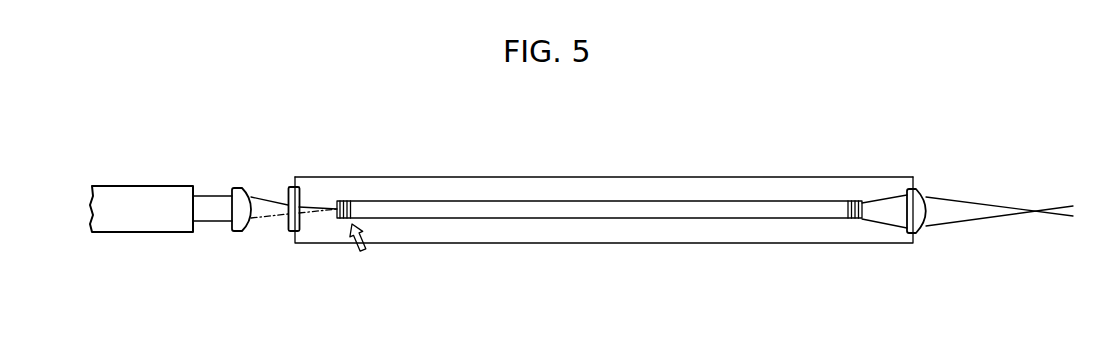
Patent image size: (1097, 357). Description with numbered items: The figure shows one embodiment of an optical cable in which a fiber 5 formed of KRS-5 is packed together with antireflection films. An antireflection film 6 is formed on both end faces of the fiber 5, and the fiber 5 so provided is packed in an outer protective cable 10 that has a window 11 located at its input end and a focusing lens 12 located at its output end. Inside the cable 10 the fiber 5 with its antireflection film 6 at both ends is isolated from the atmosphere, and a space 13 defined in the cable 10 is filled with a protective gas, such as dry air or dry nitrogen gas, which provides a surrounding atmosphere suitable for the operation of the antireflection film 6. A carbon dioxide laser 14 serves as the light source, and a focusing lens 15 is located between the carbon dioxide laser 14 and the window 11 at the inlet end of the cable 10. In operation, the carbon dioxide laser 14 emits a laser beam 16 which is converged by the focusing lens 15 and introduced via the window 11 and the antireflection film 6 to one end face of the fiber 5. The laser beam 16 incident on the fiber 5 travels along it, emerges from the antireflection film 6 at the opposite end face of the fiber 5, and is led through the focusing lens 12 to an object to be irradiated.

The fiber 5 is at (580, 219).
The antireflection film 6 is at (340, 219).
The outer protective cable 10 is at (383, 177).
The window 11 is at (287, 225).
The focusing lens 12 is at (922, 190).
The space 13 is at (586, 177).
The carbon dioxide laser 14 is at (110, 186).
The focusing lens 15 is at (236, 187).
The laser beam 16 is at (210, 222).